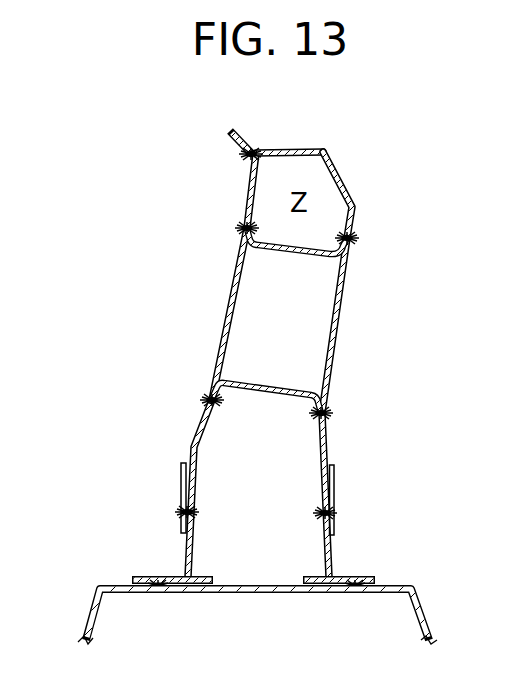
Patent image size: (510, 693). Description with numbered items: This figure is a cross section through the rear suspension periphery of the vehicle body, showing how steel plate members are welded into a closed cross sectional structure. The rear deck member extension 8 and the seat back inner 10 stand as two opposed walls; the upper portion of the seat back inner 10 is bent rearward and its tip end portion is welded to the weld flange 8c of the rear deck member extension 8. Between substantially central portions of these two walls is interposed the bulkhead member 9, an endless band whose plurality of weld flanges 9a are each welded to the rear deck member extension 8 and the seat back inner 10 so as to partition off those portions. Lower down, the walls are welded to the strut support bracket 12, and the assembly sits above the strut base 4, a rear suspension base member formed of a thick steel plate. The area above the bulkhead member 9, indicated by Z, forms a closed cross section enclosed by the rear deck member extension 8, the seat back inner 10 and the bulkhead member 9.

The rear deck member extension 8 is at (224, 322).
The weld flange 8c is at (246, 158).
The bulkhead member 9 is at (296, 257).
The weld flanges 9a is at (245, 225).
The seat back inner 10 is at (340, 344).
The strut support bracket 12 is at (334, 527).
The strut base 4 is at (428, 607).